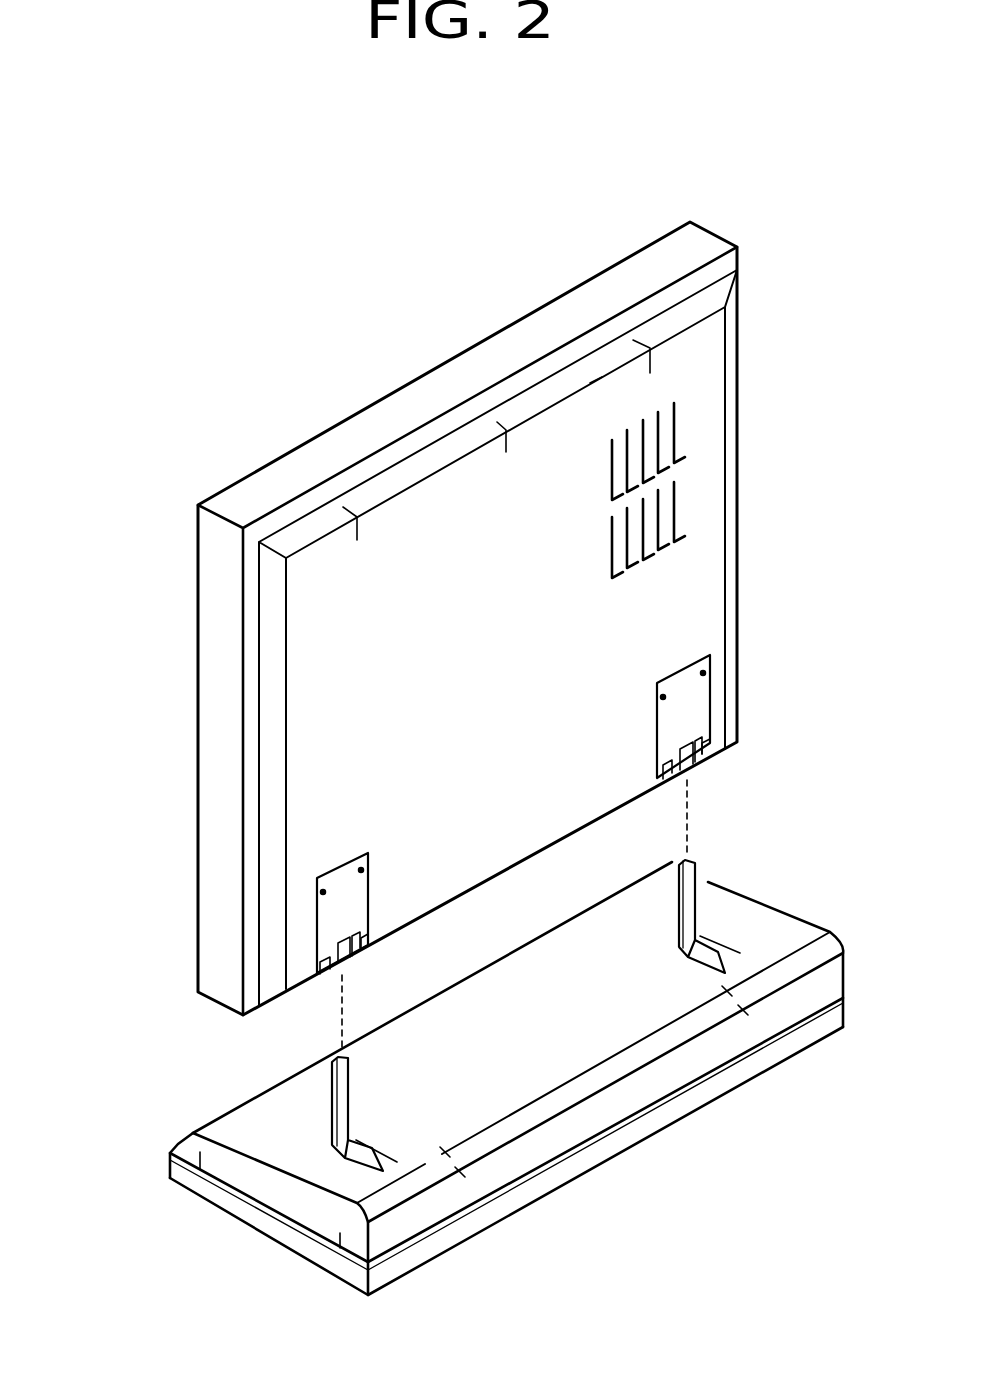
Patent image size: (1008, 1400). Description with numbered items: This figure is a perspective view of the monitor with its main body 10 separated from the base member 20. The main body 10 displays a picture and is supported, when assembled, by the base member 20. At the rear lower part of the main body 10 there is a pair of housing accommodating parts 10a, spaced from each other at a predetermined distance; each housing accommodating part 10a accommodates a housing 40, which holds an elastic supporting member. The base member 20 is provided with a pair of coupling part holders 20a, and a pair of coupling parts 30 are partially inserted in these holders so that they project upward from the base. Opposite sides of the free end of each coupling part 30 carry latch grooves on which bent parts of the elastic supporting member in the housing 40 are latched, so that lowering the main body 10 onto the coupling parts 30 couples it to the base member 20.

The main body 10 is at (197, 688).
The housing accommodating part 10a is at (365, 945).
The base member 20 is at (307, 1262).
The coupling part holder 20a is at (378, 1158).
The coupling part 30 is at (353, 1062).
The housing 40 is at (354, 908).